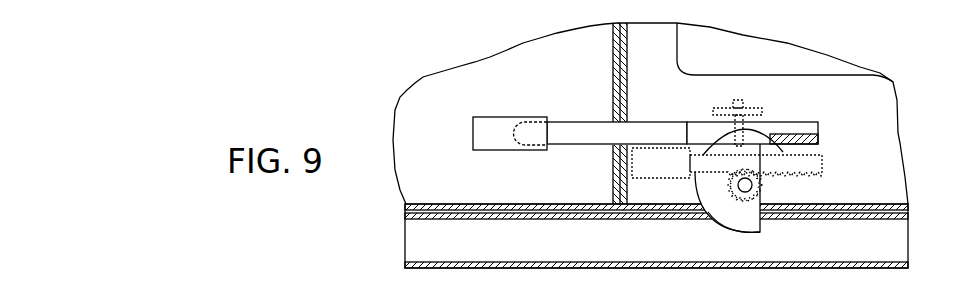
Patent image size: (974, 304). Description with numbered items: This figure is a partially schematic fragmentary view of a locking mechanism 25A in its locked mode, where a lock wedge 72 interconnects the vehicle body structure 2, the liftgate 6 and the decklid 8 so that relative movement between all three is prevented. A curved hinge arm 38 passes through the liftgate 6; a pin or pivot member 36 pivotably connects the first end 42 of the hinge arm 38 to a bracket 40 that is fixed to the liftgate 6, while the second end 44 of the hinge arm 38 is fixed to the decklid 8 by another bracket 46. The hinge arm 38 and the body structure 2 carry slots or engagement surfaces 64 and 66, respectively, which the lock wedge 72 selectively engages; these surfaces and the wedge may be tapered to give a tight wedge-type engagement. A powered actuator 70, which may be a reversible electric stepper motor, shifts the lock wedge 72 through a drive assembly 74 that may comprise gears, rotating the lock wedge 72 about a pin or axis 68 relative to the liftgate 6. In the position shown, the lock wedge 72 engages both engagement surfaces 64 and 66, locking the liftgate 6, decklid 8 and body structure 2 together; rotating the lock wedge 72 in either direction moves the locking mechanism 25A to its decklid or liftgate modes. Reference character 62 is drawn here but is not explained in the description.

The body structure 2 is at (437, 267).
The liftgate 6 is at (880, 88).
The decklid 8 is at (423, 98).
The locking mechanism 25A is at (779, 100).
The pin or pivot member 36 is at (740, 103).
The curved hinge arm 38 is at (585, 133).
The bracket 40 is at (752, 107).
The first end 42 is at (698, 130).
The second end 44 is at (517, 133).
The bracket 46 is at (482, 130).
The cam surface 62 is at (768, 137).
The slot or engagement surface 64 is at (767, 144).
The slot or engagement surface 66 is at (707, 197).
The pin or axis 68 is at (763, 187).
The powered actuator 70 is at (657, 173).
The lock wedge 72 is at (743, 234).
The drive assembly 74 is at (722, 184).